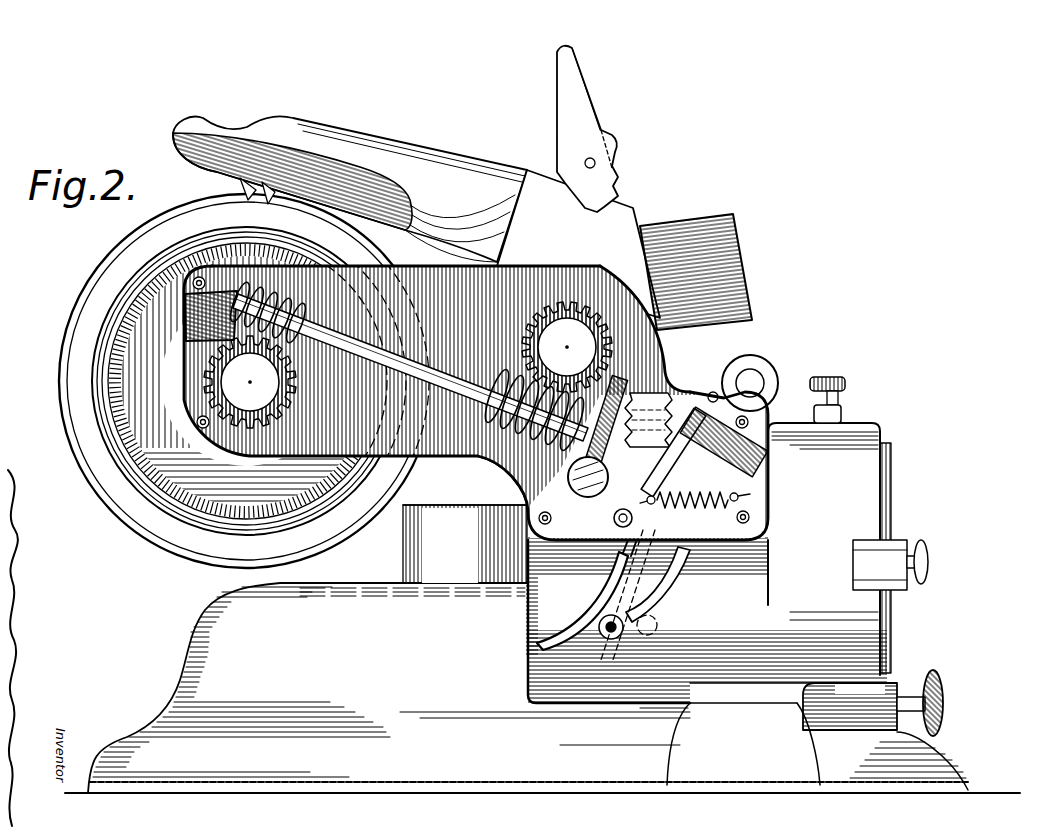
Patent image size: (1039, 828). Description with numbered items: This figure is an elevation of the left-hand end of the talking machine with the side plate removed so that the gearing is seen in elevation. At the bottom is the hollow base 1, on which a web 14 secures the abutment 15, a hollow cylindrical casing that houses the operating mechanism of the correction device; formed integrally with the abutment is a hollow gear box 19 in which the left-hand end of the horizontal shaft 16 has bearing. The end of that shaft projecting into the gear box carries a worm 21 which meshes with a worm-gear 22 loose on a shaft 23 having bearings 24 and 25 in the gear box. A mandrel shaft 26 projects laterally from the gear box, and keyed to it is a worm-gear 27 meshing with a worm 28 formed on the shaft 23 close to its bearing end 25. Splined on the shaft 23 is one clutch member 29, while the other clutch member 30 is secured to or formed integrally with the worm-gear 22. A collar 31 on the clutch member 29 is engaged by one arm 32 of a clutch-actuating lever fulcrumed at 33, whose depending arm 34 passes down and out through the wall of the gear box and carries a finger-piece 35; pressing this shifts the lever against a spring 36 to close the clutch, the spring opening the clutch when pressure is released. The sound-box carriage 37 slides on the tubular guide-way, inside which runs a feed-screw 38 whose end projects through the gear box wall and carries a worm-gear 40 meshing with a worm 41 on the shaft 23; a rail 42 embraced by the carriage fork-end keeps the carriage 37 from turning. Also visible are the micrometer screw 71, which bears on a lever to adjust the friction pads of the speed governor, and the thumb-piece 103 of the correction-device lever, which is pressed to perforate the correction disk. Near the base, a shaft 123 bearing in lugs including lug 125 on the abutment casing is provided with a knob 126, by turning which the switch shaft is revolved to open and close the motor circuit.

The base 1 is at (542, 688).
The web 14 is at (817, 746).
The abutment 15 is at (497, 681).
The horizontal shaft 16 is at (598, 486).
The gear box 19 is at (487, 433).
The worm 21 is at (572, 467).
The worm-gear 22 is at (625, 418).
The shaft 23 is at (395, 352).
The bearing 24 is at (742, 405).
The bearing 25 is at (185, 338).
The mandrel shaft 26 is at (233, 382).
The worm-gear 27 is at (282, 398).
The worm 28 is at (297, 325).
The clutch member 29 is at (705, 412).
The clutch member 30 is at (670, 365).
The collar 31 is at (716, 392).
The arm of clutch-actuating lever 32 is at (756, 479).
The fulcrum 33 is at (612, 540).
The depending arm of clutch-actuating lever 34 is at (665, 570).
The finger-piece 35 is at (586, 618).
The spring 36 is at (700, 520).
The sound-box carriage 37 is at (612, 213).
The feed-screw 38 is at (568, 338).
The worm-gear 40 is at (543, 342).
The worm 41 is at (497, 378).
The rail 42 is at (748, 380).
The micrometer screw 71 is at (838, 397).
The thumb-piece 103 is at (925, 561).
The shaft 123 is at (908, 700).
The lug 125 is at (875, 731).
The knob 126 is at (944, 700).